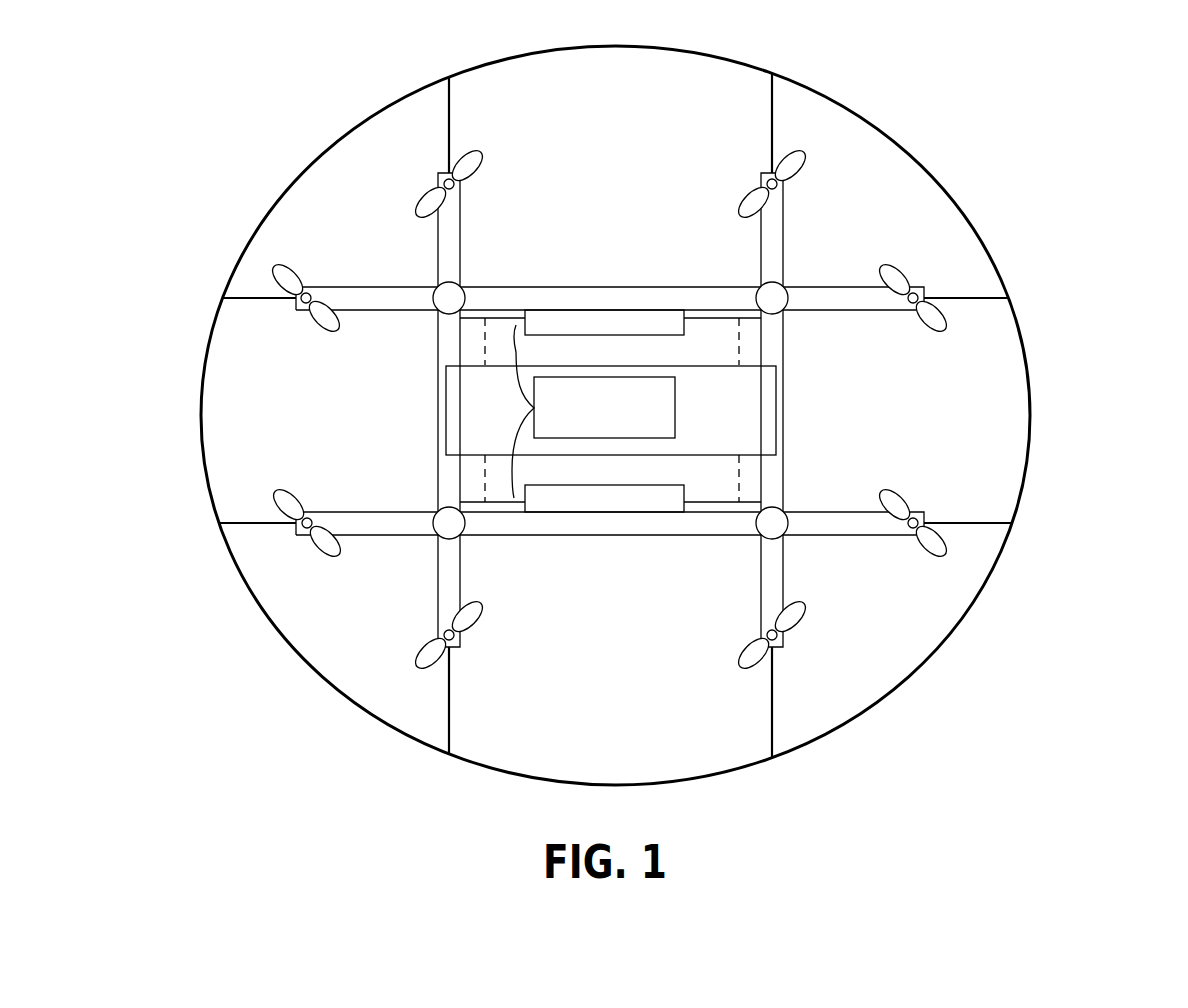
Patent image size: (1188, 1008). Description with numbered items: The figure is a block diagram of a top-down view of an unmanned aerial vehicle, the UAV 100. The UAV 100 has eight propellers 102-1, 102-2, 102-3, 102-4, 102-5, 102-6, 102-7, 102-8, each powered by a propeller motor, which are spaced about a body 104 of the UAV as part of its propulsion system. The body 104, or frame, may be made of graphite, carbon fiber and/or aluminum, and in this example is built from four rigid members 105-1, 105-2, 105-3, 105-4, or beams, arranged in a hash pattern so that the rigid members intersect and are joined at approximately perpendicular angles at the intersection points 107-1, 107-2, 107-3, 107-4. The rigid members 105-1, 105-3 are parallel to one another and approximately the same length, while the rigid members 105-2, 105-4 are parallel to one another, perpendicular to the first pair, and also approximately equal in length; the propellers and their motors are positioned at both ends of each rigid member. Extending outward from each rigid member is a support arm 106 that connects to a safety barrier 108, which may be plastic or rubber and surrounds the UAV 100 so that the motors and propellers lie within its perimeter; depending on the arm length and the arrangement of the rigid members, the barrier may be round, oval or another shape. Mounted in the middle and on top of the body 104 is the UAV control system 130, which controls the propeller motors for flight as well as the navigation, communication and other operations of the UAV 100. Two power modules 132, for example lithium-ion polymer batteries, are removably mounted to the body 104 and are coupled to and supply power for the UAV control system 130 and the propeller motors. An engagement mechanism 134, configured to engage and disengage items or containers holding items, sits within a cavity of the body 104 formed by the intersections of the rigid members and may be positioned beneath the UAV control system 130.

The UAV 100 is at (1060, 121).
The propeller 102-1 is at (488, 150).
The propeller 102-2 is at (800, 170).
The propeller 102-3 is at (937, 333).
The propeller 102-4 is at (900, 487).
The propeller 102-5 is at (807, 607).
The propeller 102-6 is at (488, 604).
The propeller 102-7 is at (289, 488).
The propeller 102-8 is at (297, 262).
The body 104 is at (583, 287).
The rigid member 105-1 is at (821, 288).
The rigid member 105-2 is at (785, 250).
The rigid member 105-3 is at (820, 513).
The rigid member 105-4 is at (461, 241).
The support arm 106 is at (447, 110).
The intersection point 107-1 is at (437, 311).
The intersection point 107-2 is at (786, 311).
The intersection point 107-3 is at (787, 536).
The intersection point 107-4 is at (438, 530).
The safety barrier 108 is at (888, 135).
The UAV control system 130 is at (762, 412).
The power module 132 is at (620, 334).
The engagement mechanism 134 is at (704, 328).